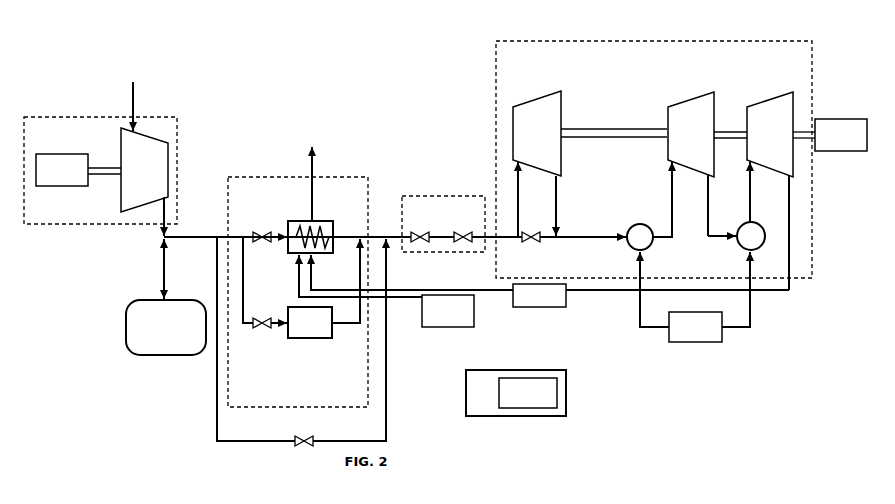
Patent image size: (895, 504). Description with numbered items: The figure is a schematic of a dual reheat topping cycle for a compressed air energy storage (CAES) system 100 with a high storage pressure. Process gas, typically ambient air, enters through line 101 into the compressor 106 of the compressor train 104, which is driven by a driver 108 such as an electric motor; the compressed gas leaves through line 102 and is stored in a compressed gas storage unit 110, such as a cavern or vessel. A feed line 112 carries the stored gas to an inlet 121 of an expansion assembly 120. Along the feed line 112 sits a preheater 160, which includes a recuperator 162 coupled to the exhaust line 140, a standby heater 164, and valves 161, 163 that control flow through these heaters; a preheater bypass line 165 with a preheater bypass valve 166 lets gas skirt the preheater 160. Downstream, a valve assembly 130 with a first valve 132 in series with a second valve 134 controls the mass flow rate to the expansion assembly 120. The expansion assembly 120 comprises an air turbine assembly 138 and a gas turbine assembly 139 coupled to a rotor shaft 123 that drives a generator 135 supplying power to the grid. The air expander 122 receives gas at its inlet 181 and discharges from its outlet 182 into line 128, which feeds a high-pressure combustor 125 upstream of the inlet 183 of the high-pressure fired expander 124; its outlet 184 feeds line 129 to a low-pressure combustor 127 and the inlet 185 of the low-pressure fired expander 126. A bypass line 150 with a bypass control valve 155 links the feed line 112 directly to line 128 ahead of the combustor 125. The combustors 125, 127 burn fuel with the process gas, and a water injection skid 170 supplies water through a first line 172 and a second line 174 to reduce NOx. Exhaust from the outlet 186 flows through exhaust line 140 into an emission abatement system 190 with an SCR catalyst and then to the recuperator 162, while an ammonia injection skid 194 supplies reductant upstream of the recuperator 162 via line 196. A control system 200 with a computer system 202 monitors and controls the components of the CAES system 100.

The CAES system 100 is at (212, 86).
The line 101 is at (132, 108).
The line 102 is at (162, 258).
The compressor train 104 is at (53, 113).
The compressor 106 is at (120, 160).
The driver 108 is at (62, 170).
The compressed gas storage unit 110 is at (166, 327).
The feed line 112 is at (187, 235).
The expansion assembly 120 is at (653, 38).
The inlet 121 is at (503, 240).
The expander 122 is at (522, 105).
The rotor shaft 123 is at (652, 128).
The fired expander 124 is at (668, 107).
The high-pressure combustor 125 is at (628, 248).
The low-pressure fired expander 126 is at (747, 105).
The low-pressure combustor 127 is at (740, 248).
The line 128 is at (608, 233).
The line 129 is at (706, 225).
The valve assembly 130 is at (443, 193).
The first valve 132 is at (417, 232).
The second valve 134 is at (460, 232).
The generator 135 is at (830, 135).
The air turbine assembly 138 is at (535, 113).
The gas turbine assembly 139 is at (720, 112).
The exhaust line 140 is at (419, 288).
The bypass line 150 is at (557, 240).
The bypass control valve 155 is at (530, 242).
The preheater 160 is at (298, 175).
The valve 161 is at (258, 233).
The recuperator 162 is at (352, 188).
The valve 163 is at (265, 327).
The standby heater 164 is at (324, 288).
The preheater bypass line 165 is at (362, 438).
The preheater bypass valve 166 is at (305, 435).
The water injection skid 170 is at (695, 327).
The first line 172 is at (638, 307).
The second line 174 is at (755, 308).
The inlet 181 is at (513, 163).
The outlet 182 is at (557, 178).
The inlet 183 is at (668, 168).
The outlet 184 is at (716, 177).
The inlet 185 is at (753, 167).
The outlet 186 is at (792, 180).
The emission abatement system 190 is at (539, 295).
The ammonia injection skid 194 is at (448, 311).
The line 196 is at (402, 300).
The control system 200 is at (500, 400).
The computer system 202 is at (528, 393).